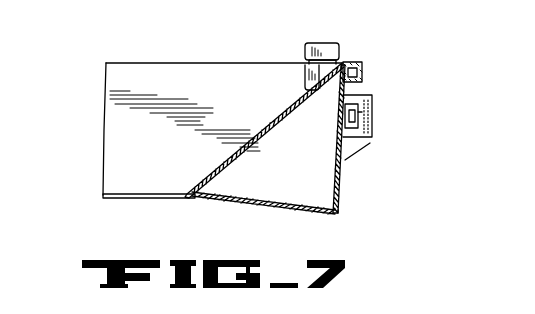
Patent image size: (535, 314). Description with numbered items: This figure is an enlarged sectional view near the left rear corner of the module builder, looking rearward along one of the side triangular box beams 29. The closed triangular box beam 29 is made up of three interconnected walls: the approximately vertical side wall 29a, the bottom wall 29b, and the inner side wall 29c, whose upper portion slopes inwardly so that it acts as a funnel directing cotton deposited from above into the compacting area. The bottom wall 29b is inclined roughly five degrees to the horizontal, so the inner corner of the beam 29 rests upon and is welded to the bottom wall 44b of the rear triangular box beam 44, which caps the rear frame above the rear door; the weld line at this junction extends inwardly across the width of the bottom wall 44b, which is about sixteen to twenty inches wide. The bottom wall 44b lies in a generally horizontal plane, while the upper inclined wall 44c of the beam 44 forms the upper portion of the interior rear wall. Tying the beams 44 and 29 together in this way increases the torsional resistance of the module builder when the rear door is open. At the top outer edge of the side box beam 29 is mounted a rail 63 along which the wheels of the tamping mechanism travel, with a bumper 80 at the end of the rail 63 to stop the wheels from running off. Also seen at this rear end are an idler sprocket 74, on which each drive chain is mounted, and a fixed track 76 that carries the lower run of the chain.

The closed triangular box beam 29 is at (248, 207).
The side wall of triangular box beam 29a is at (340, 178).
The bottom wall of triangular box beam 29b is at (327, 214).
The inner side wall of triangular box beam 29c is at (228, 165).
The closed triangular box beam 44 is at (106, 86).
The bottom wall of box beam 44b is at (104, 198).
The upper inclined wall of triangular box beam 44c is at (156, 63).
The rail 63 is at (356, 62).
The idler sprocket 74 is at (372, 106).
The fixed track 76 is at (372, 145).
The bumper 80 is at (322, 47).